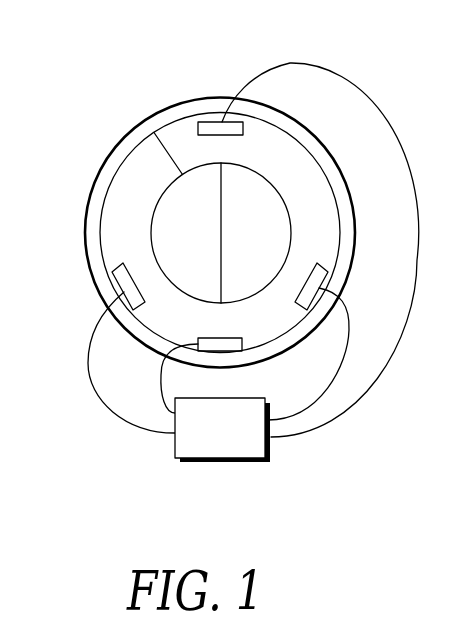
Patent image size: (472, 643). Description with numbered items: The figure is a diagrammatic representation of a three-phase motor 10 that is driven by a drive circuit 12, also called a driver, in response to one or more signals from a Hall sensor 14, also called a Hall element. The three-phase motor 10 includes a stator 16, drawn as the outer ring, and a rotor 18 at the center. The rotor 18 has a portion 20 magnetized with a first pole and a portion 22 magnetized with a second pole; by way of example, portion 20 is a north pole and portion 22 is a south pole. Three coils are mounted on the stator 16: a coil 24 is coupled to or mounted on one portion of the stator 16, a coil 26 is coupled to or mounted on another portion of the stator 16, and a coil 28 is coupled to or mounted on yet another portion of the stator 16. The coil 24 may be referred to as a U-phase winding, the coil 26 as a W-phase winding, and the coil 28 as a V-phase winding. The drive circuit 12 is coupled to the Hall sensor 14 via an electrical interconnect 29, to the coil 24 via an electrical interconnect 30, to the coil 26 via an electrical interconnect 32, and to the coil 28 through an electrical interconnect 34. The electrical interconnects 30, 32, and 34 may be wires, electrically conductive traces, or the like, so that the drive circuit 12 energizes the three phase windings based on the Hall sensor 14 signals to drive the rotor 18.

The three-phase motor 10 is at (182, 83).
The drive circuit 12 is at (205, 465).
The Hall sensor 14 is at (228, 350).
The stator 16 is at (107, 160).
The rotor 18 is at (155, 133).
The portion magnetized with a first pole 20 is at (303, 190).
The portion magnetized with a second pole 22 is at (123, 218).
The coil 24 is at (118, 268).
The coil 26 is at (321, 263).
The coil 28 is at (243, 131).
The electrical interconnect 29 is at (157, 380).
The electrical interconnect 30 is at (100, 403).
The electrical interconnect 32 is at (333, 383).
The electrical interconnect 34 is at (393, 122).